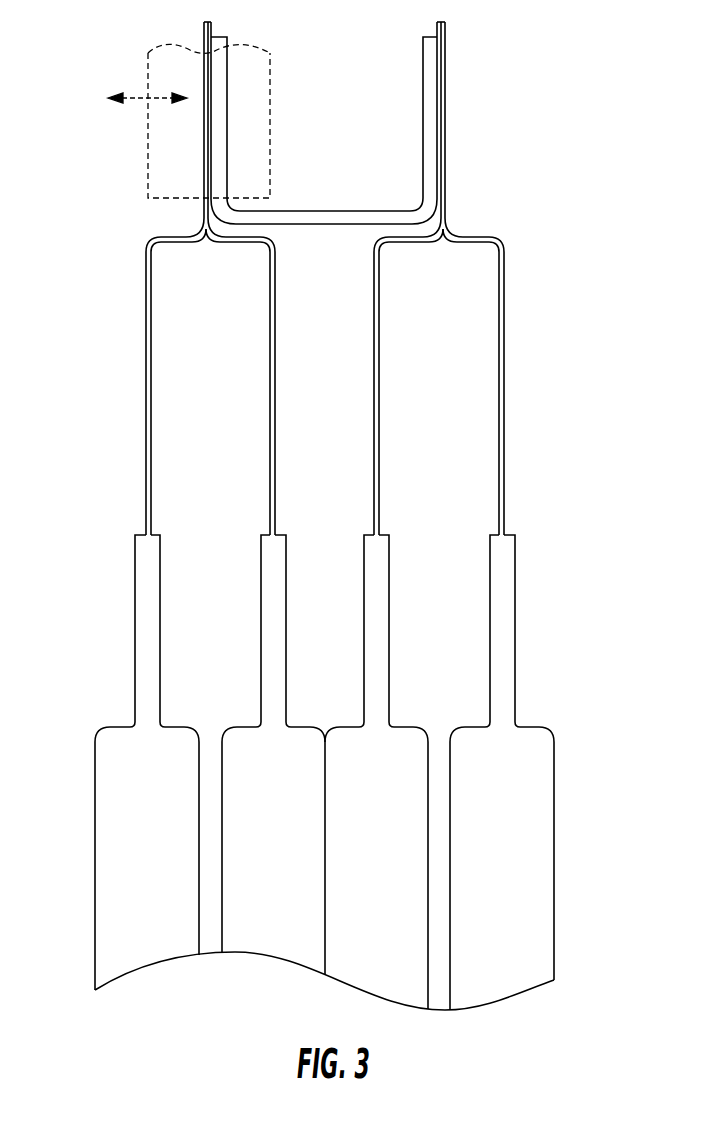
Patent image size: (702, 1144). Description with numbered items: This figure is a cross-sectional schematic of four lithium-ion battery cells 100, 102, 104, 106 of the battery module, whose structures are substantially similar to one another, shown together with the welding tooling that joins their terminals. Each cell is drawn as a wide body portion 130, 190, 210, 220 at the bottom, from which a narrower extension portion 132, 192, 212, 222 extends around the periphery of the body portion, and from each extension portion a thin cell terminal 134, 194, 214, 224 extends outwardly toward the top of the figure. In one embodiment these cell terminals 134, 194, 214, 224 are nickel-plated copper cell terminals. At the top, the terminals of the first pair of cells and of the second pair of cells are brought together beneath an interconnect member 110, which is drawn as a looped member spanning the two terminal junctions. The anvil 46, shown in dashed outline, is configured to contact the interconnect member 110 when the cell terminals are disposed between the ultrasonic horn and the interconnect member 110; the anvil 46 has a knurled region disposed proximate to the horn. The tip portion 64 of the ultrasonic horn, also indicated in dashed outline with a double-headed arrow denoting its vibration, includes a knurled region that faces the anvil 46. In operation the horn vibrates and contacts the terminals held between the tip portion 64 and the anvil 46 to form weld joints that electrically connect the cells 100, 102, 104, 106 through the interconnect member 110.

The anvil 46 is at (258, 90).
The tip portion 64 is at (158, 62).
The interconnect member 110 is at (303, 210).
The cell terminal 134 is at (145, 243).
The cell terminal 194 is at (233, 243).
The cell terminal 214 is at (375, 293).
The cell terminal 224 is at (497, 242).
The extension portion 132 is at (143, 598).
The extension portion 192 is at (270, 598).
The extension portion 212 is at (378, 598).
The extension portion 222 is at (503, 598).
The body portion 130 is at (108, 780).
The body portion 190 is at (237, 742).
The body portion 210 is at (347, 742).
The body portion 220 is at (535, 738).
The battery cell 100 is at (124, 852).
The battery cell 102 is at (266, 824).
The battery cell 104 is at (370, 841).
The battery cell 106 is at (508, 842).